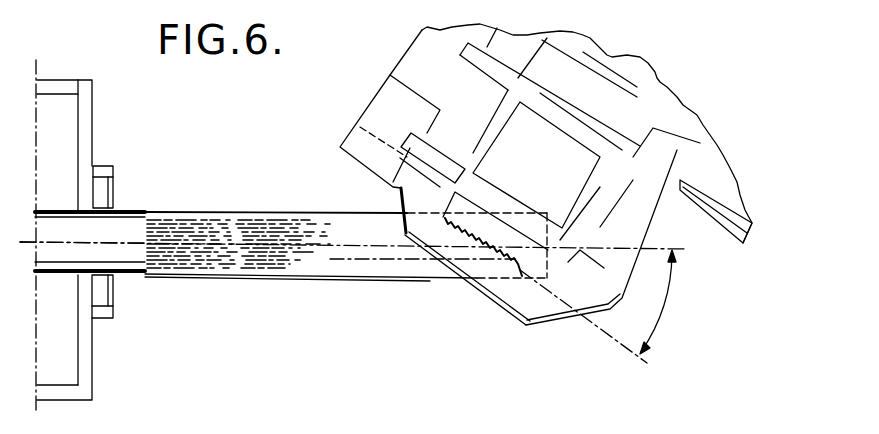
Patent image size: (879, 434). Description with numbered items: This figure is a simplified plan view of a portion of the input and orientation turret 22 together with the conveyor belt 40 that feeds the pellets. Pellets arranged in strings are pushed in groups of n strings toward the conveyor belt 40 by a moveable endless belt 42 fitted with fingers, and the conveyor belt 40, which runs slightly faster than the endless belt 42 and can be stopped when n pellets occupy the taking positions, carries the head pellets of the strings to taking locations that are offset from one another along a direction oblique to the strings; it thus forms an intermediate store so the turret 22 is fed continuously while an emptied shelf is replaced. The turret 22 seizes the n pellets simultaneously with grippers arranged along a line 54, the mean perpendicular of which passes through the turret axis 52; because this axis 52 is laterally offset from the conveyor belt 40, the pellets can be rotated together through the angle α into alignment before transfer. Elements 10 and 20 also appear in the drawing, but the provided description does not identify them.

The hammer head 10 is at (421, 260).
The wall / support structure 20 is at (76, 74).
The input and orientation turret 22 is at (383, 74).
The conveyor belt 40 is at (360, 270).
The endless belt 42 is at (120, 245).
The axis of the turret 52 is at (541, 172).
The line 54 is at (612, 340).